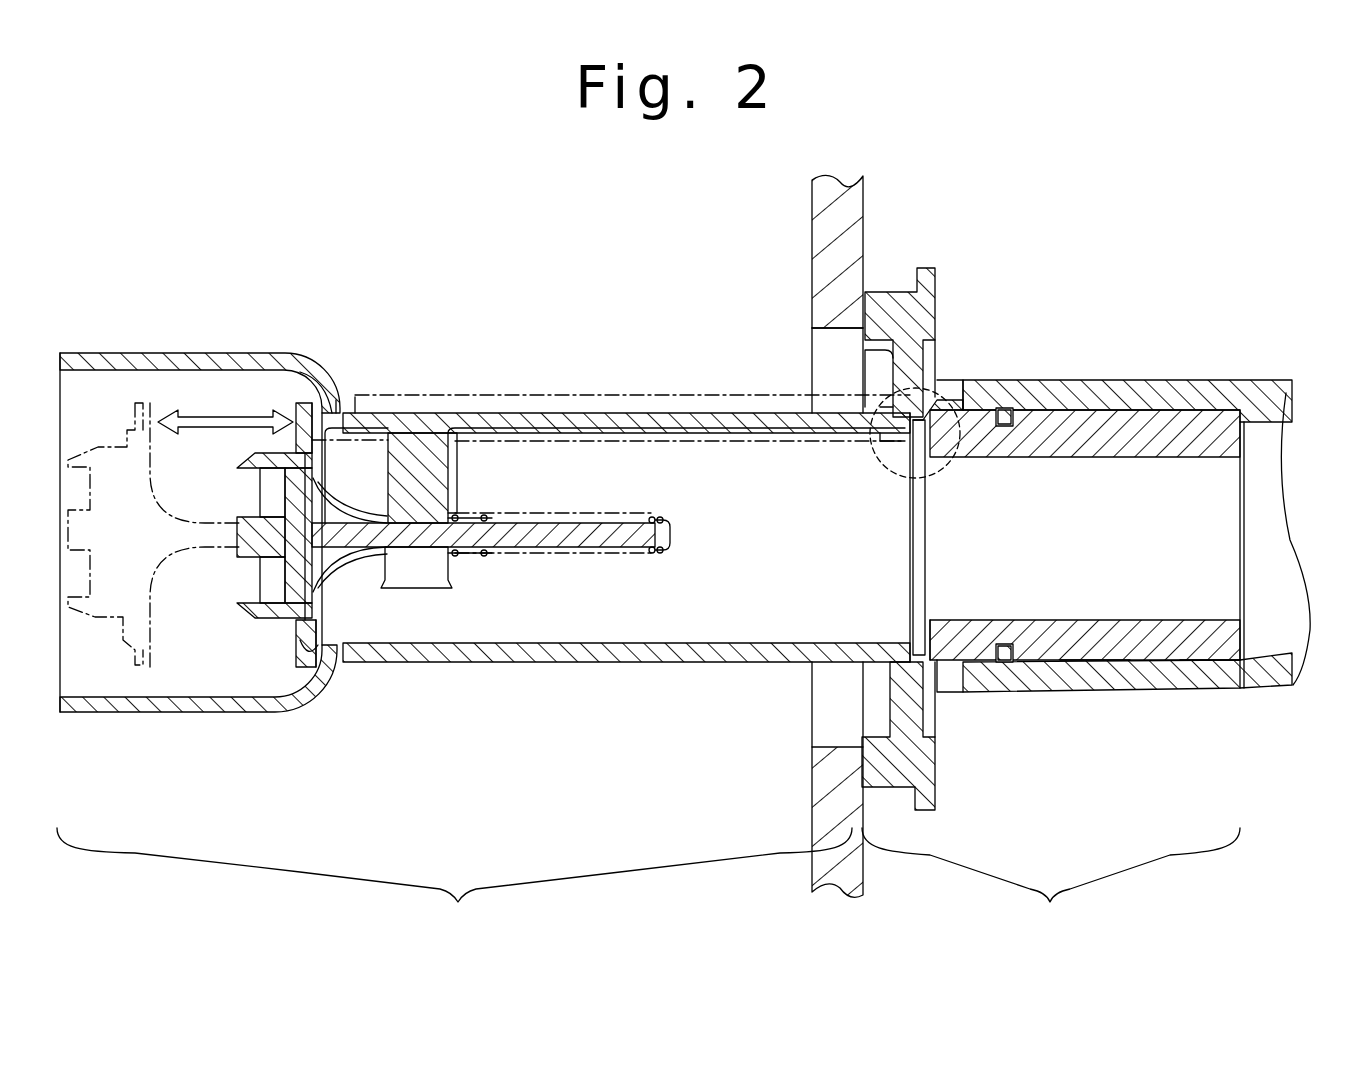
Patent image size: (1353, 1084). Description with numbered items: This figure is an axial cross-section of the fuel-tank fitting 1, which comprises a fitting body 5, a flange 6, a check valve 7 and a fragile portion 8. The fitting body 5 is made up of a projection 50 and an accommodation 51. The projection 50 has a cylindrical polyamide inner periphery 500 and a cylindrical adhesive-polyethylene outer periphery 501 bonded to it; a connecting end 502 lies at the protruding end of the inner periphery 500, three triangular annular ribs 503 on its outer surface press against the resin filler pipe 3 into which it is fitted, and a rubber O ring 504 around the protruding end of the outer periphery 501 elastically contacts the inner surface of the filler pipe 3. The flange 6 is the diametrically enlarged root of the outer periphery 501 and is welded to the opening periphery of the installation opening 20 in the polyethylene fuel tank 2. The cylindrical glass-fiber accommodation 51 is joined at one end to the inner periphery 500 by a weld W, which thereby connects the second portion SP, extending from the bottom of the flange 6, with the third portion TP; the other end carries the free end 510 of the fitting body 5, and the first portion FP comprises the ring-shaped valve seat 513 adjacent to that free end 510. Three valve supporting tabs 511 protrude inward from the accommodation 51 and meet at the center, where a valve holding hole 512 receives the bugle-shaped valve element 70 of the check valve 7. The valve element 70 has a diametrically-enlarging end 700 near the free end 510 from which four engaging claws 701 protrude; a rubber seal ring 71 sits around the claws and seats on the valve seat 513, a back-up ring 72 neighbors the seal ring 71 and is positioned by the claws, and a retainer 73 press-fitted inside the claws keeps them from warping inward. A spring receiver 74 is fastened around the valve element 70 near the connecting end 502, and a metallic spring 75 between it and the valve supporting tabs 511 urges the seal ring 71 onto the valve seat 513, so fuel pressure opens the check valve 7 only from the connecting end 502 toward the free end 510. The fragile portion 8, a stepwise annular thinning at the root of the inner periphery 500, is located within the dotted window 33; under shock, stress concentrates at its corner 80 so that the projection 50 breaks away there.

The fuel-tank fitting 1 is at (552, 222).
The fuel tank 2 is at (835, 172).
The installation opening 20 is at (825, 332).
The filler pipe 3 is at (1130, 382).
The window 33 is at (940, 478).
The fitting body 5 is at (528, 352).
The projection 50 is at (1051, 883).
The inner periphery 500 is at (945, 625).
The outer periphery 501 is at (950, 662).
The connecting end 502 is at (1215, 662).
The annular ribs 503 is at (1110, 662).
The O ring 504 is at (998, 662).
The accommodation 51 is at (454, 883).
The free end 510 is at (62, 708).
The valve supporting tabs 511 is at (428, 492).
The valve holding hole 512 is at (385, 522).
The valve seat 513 is at (300, 652).
The flange 6 is at (928, 308).
The check valve 7 is at (528, 492).
The valve element 70 is at (565, 548).
The diametrically-enlarging end 700 is at (330, 565).
The engaging claws 701 is at (250, 460).
The seal ring 71 is at (335, 380).
The back-up ring 72 is at (325, 415).
The retainer 73 is at (280, 503).
The spring receiver 74 is at (657, 557).
The spring 75 is at (607, 516).
The fragile portion 8 is at (910, 467).
The corner 80 is at (897, 437).
The first portion FP is at (345, 410).
The third portion TP is at (625, 398).
The second portion SP is at (938, 405).
The weld W is at (872, 392).